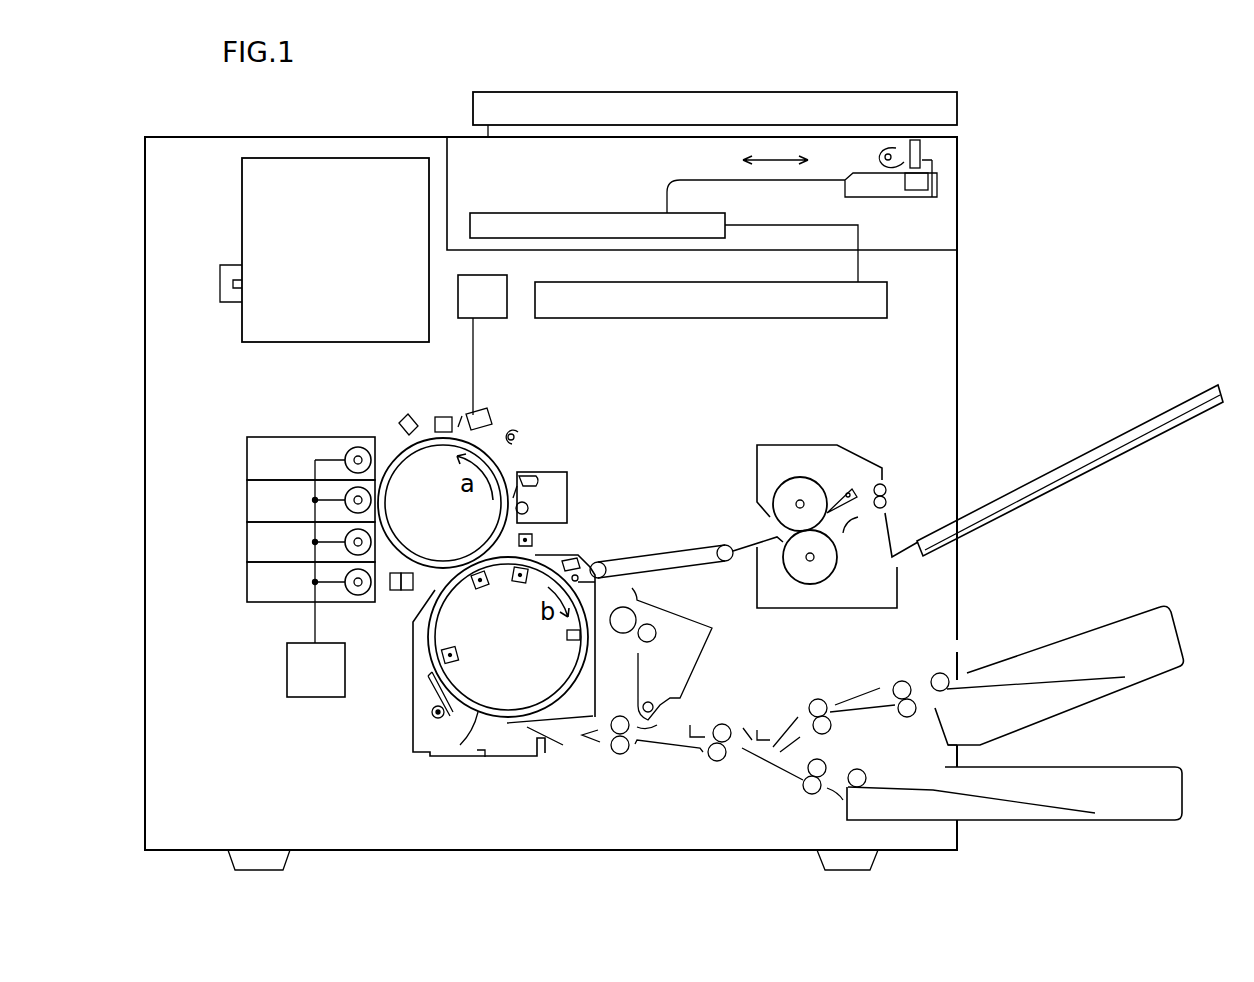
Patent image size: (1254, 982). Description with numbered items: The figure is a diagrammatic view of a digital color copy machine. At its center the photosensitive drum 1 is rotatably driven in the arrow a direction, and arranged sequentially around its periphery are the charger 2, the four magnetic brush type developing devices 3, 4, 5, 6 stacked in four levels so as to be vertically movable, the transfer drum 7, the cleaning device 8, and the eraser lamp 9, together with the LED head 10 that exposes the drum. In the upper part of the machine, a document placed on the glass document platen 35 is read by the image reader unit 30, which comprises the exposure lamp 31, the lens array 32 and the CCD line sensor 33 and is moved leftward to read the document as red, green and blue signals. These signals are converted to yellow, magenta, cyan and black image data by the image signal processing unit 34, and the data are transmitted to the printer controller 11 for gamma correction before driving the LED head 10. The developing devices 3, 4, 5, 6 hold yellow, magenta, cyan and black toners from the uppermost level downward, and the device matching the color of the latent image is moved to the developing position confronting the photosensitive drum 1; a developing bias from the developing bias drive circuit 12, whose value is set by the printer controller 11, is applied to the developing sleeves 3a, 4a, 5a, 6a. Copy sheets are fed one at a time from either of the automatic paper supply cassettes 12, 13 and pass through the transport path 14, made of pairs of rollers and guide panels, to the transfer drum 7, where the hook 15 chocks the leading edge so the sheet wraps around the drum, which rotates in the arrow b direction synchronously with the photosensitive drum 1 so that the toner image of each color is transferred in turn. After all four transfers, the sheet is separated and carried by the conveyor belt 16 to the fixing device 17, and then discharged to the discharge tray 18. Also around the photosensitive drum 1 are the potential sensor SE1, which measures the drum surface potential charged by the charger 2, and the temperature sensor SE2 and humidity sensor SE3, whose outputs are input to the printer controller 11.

The photosensitive drum 1 is at (515, 468).
The charger 2 is at (489, 414).
The developing device 3 is at (247, 462).
The developing sleeve 3a is at (355, 446).
The developing device 4 is at (247, 512).
The developing sleeve 4a is at (337, 489).
The developing device 5 is at (247, 552).
The developing sleeve 5a is at (337, 529).
The developing device 6 is at (247, 592).
The developing sleeve 6a is at (337, 571).
The transfer drum 7 is at (460, 745).
The cleaning device 8 is at (568, 491).
The eraser lamp 9 is at (520, 437).
The LED head 10 is at (441, 416).
The printer controller 11 is at (887, 296).
The developing bias drive circuit / automatic paper supply cassette 12 is at (287, 676).
The automatic paper supply cassette 13 is at (1143, 767).
The transport path 14 is at (672, 752).
The hook 15 is at (497, 718).
The conveyor belt 16 is at (668, 551).
The fixing device 17 is at (800, 477).
The discharge tray 18 is at (500, 318).
The image reader unit 30 is at (918, 210).
The exposure lamp 31 is at (877, 153).
The lens array 32 is at (921, 150).
The CCD line sensor 33 is at (930, 183).
The image signal processing unit 34 is at (555, 214).
The glass document platen 35 is at (806, 124).
The potential sensor SE1 is at (405, 418).
The temperature sensor SE2 is at (395, 591).
The humidity sensor SE3 is at (409, 592).